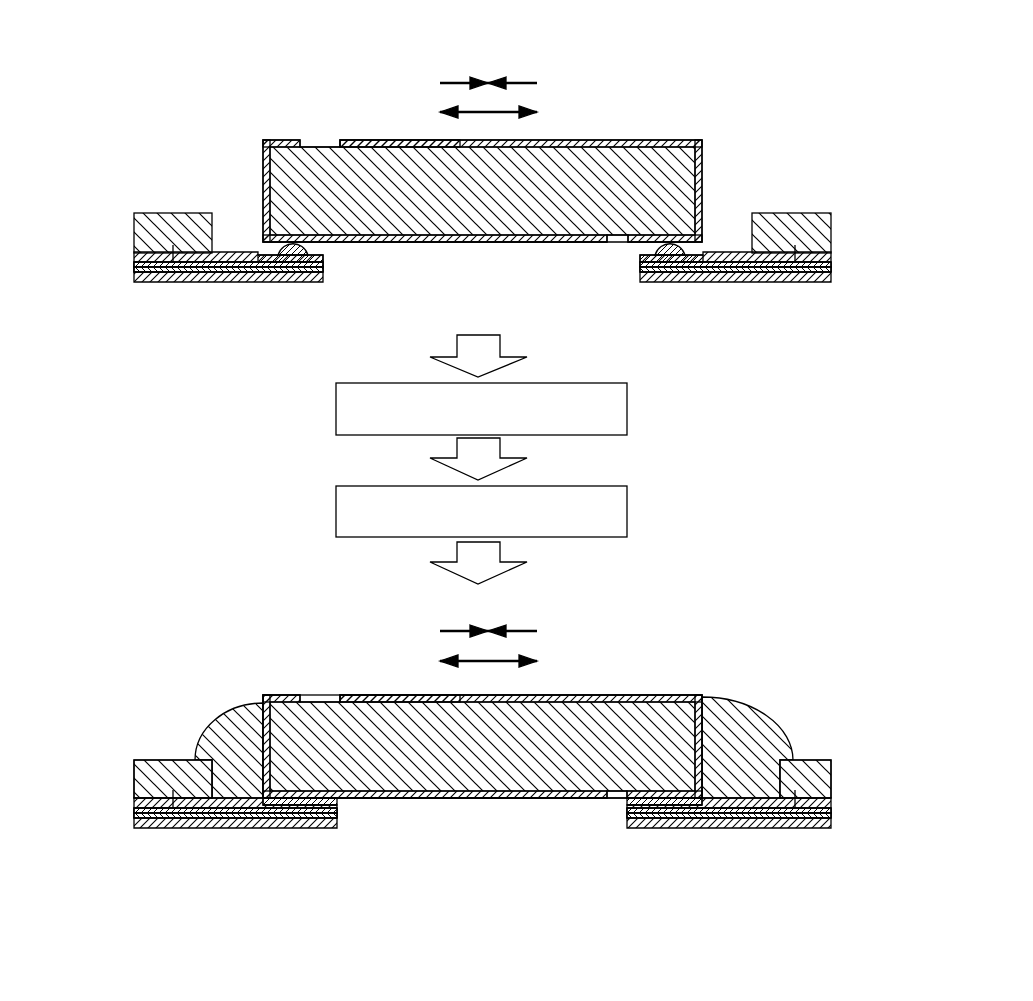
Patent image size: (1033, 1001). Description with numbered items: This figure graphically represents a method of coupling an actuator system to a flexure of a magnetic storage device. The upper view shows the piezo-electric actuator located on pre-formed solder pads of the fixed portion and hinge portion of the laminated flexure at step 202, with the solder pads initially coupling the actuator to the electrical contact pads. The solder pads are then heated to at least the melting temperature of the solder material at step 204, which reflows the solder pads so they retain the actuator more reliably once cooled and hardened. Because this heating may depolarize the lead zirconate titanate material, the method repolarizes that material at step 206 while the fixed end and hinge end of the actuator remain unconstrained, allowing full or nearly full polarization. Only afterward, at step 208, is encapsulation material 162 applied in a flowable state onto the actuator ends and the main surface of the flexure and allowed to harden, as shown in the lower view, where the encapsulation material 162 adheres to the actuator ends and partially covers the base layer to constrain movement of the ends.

The encapsulation material 162 is at (237, 724).
The locating step 202 is at (138, 156).
The heating step 204 is at (334, 409).
The repolarizing step 206 is at (334, 512).
The constraining step 208 is at (146, 661).